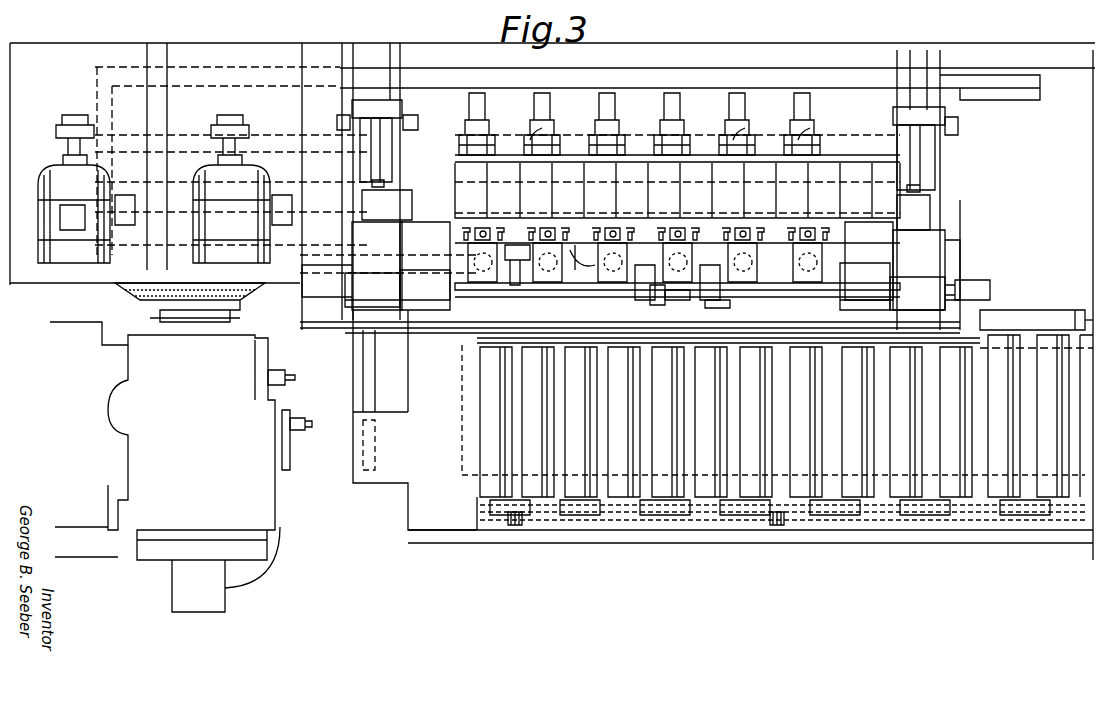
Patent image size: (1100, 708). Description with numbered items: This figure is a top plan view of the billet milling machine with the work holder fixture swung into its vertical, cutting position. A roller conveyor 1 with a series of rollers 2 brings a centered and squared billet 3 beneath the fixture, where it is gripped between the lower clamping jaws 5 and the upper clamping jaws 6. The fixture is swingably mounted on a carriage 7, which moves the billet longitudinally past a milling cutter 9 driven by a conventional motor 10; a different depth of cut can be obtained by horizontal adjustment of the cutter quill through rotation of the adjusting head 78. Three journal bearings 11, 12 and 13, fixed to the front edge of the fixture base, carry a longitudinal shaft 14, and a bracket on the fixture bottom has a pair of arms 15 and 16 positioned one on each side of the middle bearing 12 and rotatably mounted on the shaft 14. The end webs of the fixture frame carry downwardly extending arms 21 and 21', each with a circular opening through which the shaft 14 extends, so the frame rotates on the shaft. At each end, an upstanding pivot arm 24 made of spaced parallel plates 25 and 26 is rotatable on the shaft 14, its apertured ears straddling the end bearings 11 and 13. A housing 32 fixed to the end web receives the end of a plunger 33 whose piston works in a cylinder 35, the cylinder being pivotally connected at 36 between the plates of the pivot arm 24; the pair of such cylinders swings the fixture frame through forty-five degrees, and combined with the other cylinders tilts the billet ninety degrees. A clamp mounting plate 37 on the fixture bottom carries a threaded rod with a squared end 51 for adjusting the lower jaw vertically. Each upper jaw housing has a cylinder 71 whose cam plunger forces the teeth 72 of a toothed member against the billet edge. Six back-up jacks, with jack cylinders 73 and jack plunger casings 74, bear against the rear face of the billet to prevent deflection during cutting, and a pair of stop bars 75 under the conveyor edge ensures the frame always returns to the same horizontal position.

The roller conveyor 1 is at (1035, 500).
The rollers 2 is at (998, 490).
The billet 3 is at (460, 455).
The lower clamping jaws 5 is at (882, 380).
The upper clamping jaws 6 is at (570, 255).
The carriage 7 is at (700, 80).
The milling cutter 9 is at (215, 290).
The motor 10 is at (222, 444).
The journal bearing 11 is at (935, 312).
The journal bearing 12 is at (653, 310).
The journal bearing 13 is at (370, 300).
The longitudinal shaft 14 is at (718, 316).
The arm 15 is at (665, 322).
The arm 16 is at (640, 300).
The downwardly extending arm 21 is at (850, 296).
The downwardly extending arm 21' is at (425, 315).
The pivot arm 24 is at (355, 108).
The plate 25 is at (404, 235).
The plate 26 is at (352, 233).
The housing 32 is at (364, 204).
The plunger 33 is at (647, 155).
The cylinder 35 is at (385, 48).
The pivotal connection 36 is at (415, 126).
The clamp mounting plate 37 is at (512, 230).
The squared end 51 is at (790, 236).
The cylinder 71 is at (550, 270).
The teeth 72 is at (550, 100).
The jack cylinders 73 is at (622, 130).
The jack plunger casings 74 is at (800, 105).
The stop bars 75 is at (513, 527).
The adjusting head 78 is at (305, 420).